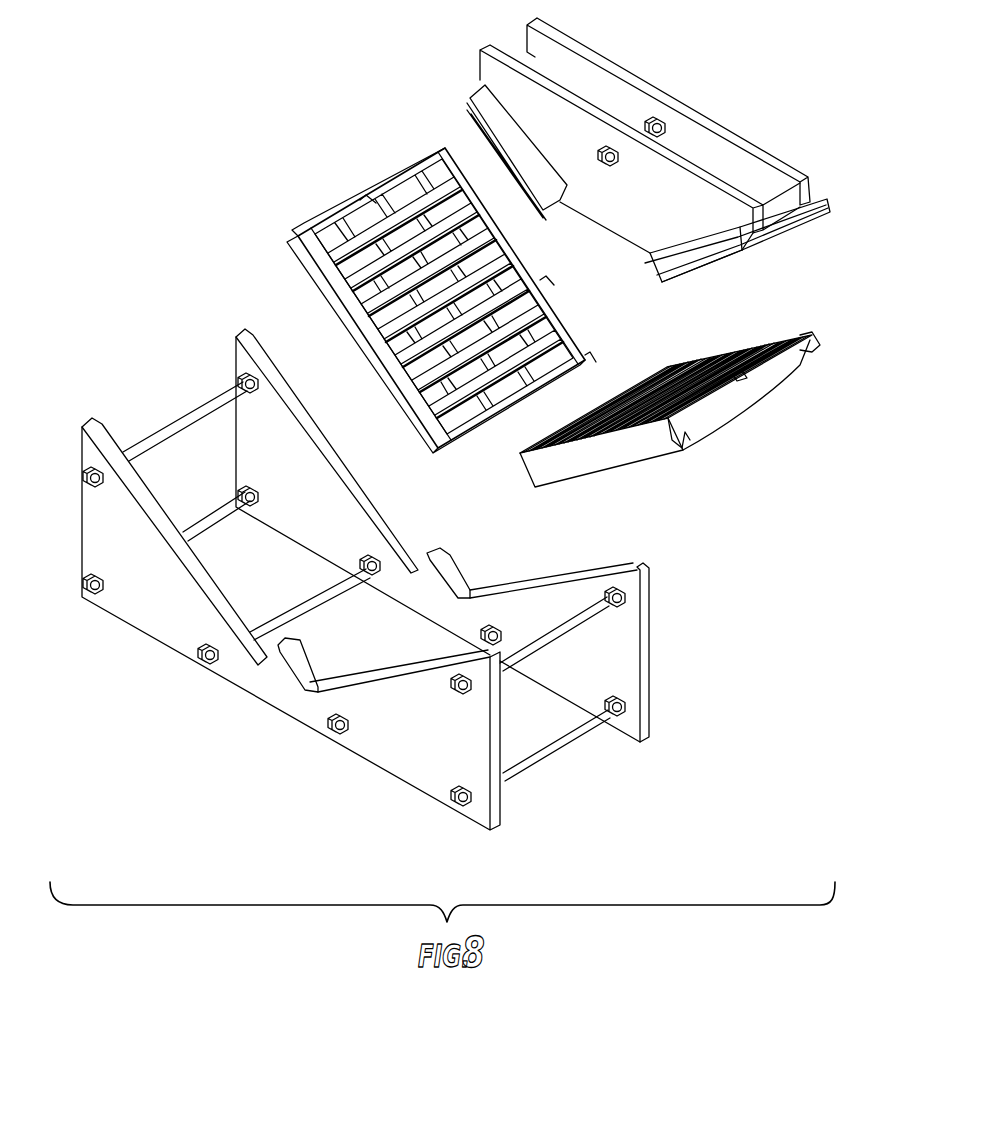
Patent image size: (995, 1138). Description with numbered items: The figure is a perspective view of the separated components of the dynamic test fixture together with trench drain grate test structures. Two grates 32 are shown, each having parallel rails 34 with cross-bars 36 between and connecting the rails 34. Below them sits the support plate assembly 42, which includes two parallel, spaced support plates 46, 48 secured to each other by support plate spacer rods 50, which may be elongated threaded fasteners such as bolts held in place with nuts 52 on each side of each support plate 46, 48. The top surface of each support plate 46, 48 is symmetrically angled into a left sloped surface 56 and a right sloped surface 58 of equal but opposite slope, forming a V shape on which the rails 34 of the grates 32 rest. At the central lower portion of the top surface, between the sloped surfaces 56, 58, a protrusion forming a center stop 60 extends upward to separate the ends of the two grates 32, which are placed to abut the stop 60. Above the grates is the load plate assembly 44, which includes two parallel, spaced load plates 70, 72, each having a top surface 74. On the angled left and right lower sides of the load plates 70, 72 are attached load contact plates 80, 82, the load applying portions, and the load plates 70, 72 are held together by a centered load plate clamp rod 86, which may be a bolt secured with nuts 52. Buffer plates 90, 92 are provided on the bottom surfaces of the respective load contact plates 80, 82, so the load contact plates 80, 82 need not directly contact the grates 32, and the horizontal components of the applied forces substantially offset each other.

The grate 32 is at (543, 326).
The rail 34 is at (296, 260).
The cross-bar 36 is at (300, 208).
The support plate assembly 42 is at (389, 592).
The load plate assembly 44 is at (633, 158).
The support plate 46 is at (150, 620).
The support plate 48 is at (637, 642).
The support plate spacer rod 50 is at (563, 737).
The nut 52 is at (455, 800).
The left sloped surface 56 is at (319, 424).
The right sloped surface 58 is at (560, 576).
The center stop 60 is at (440, 560).
The load plate 70 is at (490, 70).
The load plate 72 is at (668, 102).
The top surface 74 is at (596, 58).
The load contact plate 80 is at (523, 152).
The load contact plate 82 is at (737, 253).
The load plate clamp rod 86 is at (650, 120).
The buffer plate 90 is at (500, 147).
The buffer plate 92 is at (697, 270).